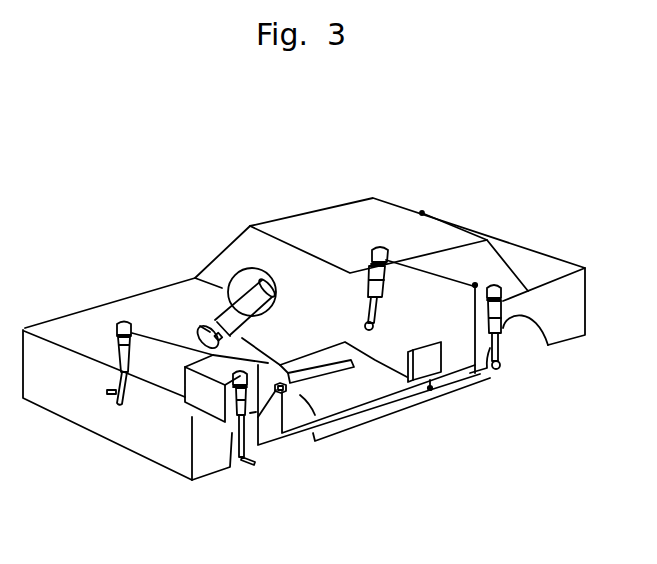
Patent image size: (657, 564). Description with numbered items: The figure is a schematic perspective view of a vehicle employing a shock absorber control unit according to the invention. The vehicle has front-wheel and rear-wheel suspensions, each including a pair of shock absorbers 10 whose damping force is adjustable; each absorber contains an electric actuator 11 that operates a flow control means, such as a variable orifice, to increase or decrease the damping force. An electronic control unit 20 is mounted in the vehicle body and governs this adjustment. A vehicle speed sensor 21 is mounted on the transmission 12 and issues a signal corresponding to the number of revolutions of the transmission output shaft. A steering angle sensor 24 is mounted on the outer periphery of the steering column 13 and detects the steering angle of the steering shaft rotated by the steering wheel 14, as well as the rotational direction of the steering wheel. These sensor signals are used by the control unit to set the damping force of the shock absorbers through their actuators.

The shock absorber 10 is at (125, 357).
The actuator 11 is at (117, 329).
The transmission 12 is at (207, 371).
The steering column 13 is at (225, 317).
The steering wheel 14 is at (252, 277).
The electronic control unit 20 is at (436, 342).
The vehicle speed sensor 21 is at (288, 388).
The steering angle sensor 24 is at (203, 330).